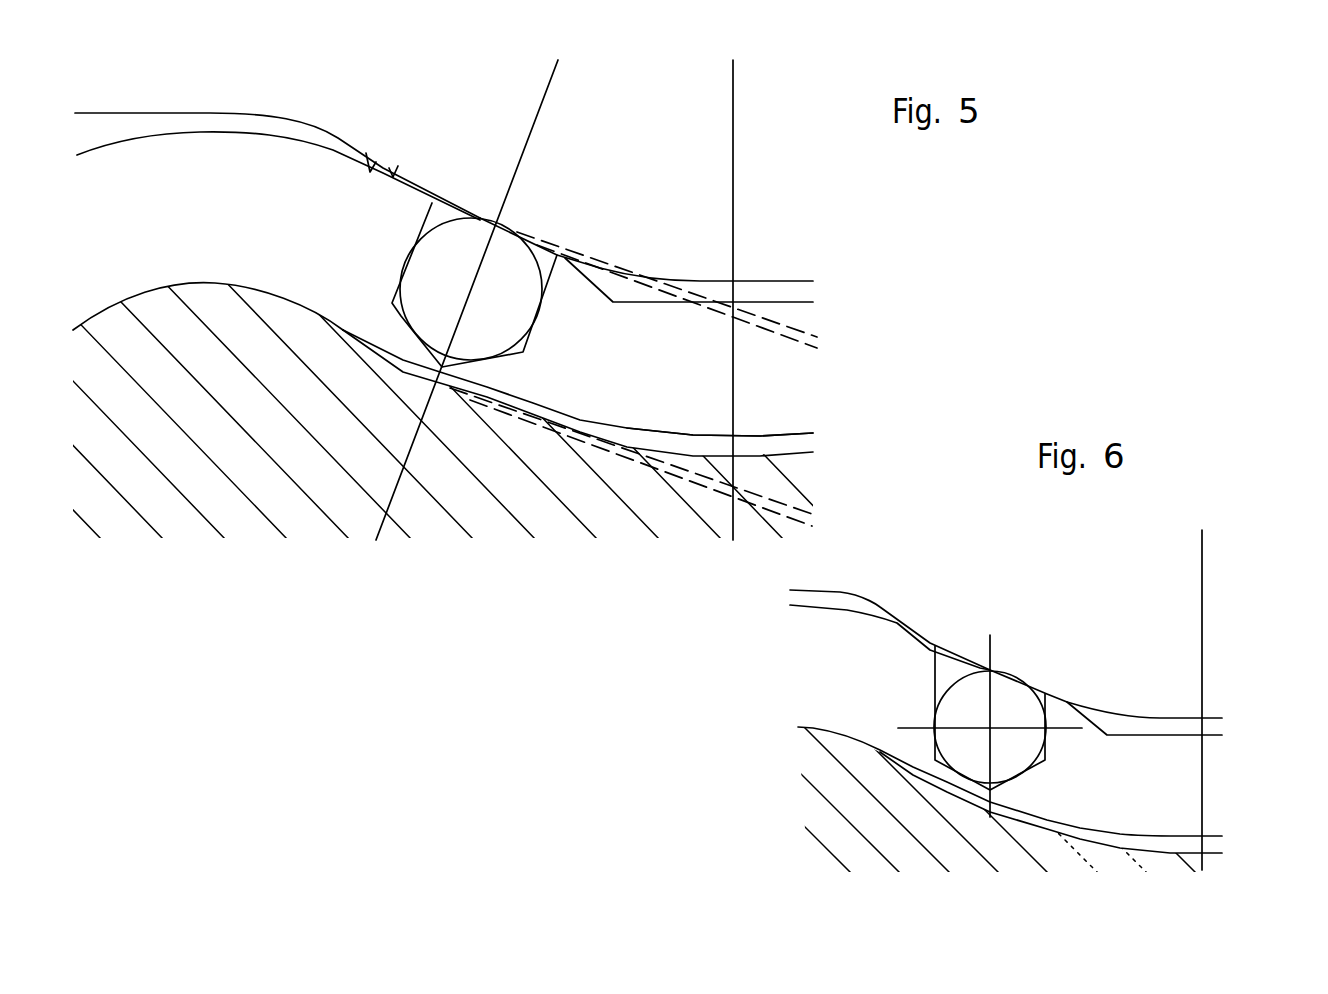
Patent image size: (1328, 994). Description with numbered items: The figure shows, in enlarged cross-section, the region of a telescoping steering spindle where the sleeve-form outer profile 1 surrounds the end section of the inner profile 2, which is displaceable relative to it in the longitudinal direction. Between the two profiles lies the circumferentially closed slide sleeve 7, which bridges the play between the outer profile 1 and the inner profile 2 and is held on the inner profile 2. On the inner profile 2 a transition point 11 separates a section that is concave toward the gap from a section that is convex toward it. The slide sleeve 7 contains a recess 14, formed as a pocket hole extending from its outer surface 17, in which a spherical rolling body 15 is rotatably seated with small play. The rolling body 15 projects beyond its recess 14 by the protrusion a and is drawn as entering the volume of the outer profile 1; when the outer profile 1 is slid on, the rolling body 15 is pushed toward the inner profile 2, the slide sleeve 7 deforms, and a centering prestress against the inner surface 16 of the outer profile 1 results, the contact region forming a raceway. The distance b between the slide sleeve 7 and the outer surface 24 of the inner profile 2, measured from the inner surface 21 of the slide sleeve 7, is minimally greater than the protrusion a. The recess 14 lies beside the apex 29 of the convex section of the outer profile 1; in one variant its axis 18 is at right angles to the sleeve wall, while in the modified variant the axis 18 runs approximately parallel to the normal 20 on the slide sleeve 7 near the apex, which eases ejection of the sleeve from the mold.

In FIG. 5, the outer profile 1 is at (142, 107).
In FIG. 6, the outer profile 1 is at (1096, 697).
In FIG. 5, the inner profile 2 is at (292, 452).
In FIG. 6, the inner profile 2 is at (838, 780).
In FIG. 5, the slide sleeve 7 is at (187, 150).
In FIG. 6, the slide sleeve 7 is at (900, 648).
In FIG. 5, the transition point 11 is at (342, 327).
In FIG. 5, the recess 14 is at (440, 218).
In FIG. 5, the rolling body 15 is at (422, 273).
In FIG. 6, the rolling body 15 is at (1016, 698).
In FIG. 5, the inner surface of the outer profile 16 is at (366, 153).
In FIG. 5, the outer surface of the slide sleeve 17 is at (389, 168).
In FIG. 5, the axis of the recess 18 is at (510, 188).
In FIG. 6, the normal 20 is at (1203, 695).
In FIG. 5, the inner surface of the slide sleeve 21 is at (698, 436).
In FIG. 5, the outer surface of the inner profile 24 is at (720, 449).
In FIG. 5, the apex 29 is at (733, 281).
In FIG. 5, the protrusion of the rolling body a is at (799, 366).
In FIG. 5, the distance of the slide sleeve from the inner profile b is at (799, 560).